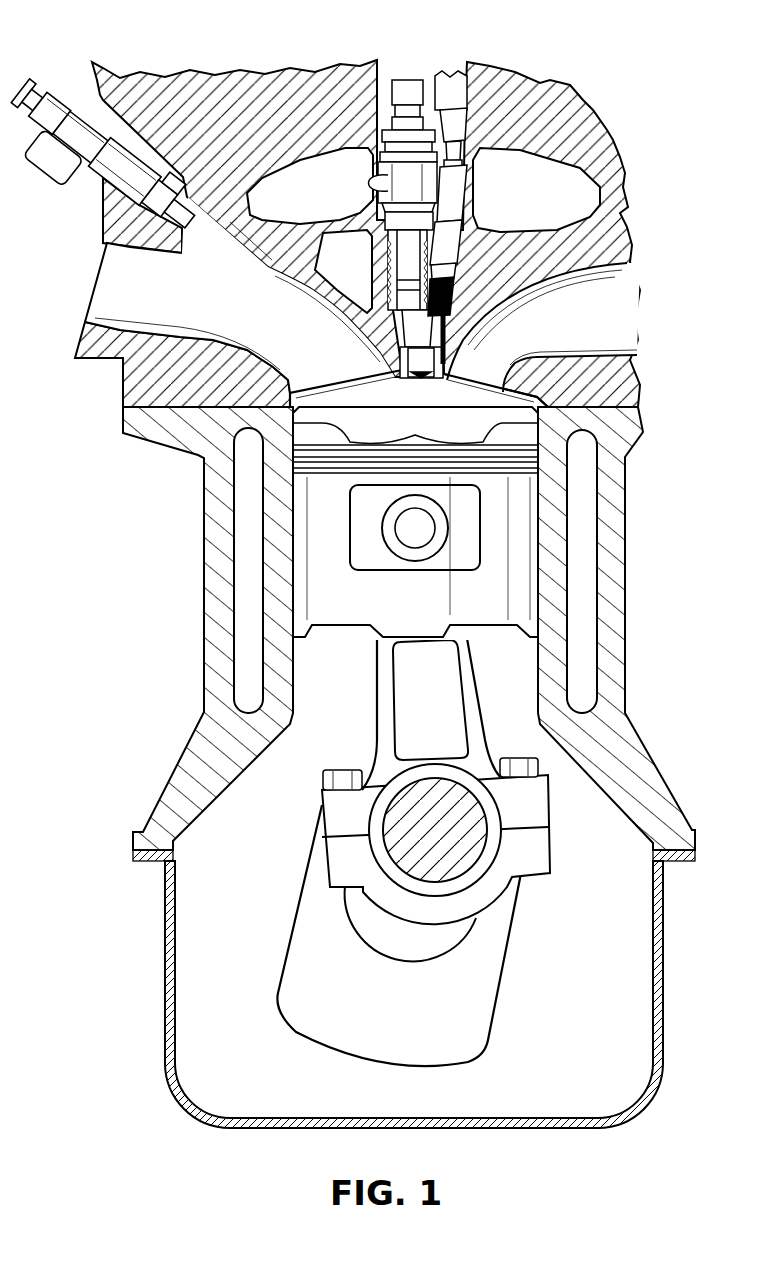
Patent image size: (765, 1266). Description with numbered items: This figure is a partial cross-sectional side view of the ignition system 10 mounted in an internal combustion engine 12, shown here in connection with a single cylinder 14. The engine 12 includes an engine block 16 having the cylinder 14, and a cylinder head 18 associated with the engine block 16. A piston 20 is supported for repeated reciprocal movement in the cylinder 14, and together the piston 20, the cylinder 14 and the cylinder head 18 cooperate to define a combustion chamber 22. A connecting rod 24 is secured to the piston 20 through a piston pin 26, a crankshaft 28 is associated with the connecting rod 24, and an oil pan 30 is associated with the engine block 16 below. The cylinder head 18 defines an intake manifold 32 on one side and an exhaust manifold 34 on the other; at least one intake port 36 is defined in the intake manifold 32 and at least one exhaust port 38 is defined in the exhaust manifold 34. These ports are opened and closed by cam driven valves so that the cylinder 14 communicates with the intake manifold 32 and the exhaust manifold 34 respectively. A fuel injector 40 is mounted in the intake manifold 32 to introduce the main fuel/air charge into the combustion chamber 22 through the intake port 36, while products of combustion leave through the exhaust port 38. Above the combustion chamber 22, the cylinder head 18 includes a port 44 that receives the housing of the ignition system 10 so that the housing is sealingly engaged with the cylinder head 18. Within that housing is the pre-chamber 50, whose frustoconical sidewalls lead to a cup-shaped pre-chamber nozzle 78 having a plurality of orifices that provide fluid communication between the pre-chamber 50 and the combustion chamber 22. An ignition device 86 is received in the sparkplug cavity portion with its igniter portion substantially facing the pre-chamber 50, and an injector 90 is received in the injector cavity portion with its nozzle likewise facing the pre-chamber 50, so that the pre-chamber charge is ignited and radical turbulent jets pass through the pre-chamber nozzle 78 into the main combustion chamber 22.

The ignition system 10 is at (353, 568).
The internal combustion engine 12 is at (363, 611).
The cylinder 14 is at (552, 670).
The engine block 16 is at (612, 507).
The cylinder head 18 is at (226, 65).
The piston 20 is at (290, 531).
The combustion chamber 22 is at (415, 523).
The connecting rod 24 is at (370, 700).
The piston pin 26 is at (415, 533).
The crankshaft 28 is at (490, 960).
The oil pan 30 is at (664, 962).
The intake manifold 32 is at (108, 285).
The exhaust manifold 34 is at (622, 282).
The intake port 36 is at (300, 390).
The exhaust port 38 is at (512, 360).
The fuel injector 40 is at (122, 173).
The port 44 is at (388, 183).
The pre-chamber 50 is at (445, 323).
The pre-chamber nozzle 78 is at (423, 382).
The ignition device 86 is at (470, 243).
The injector 90 is at (410, 220).